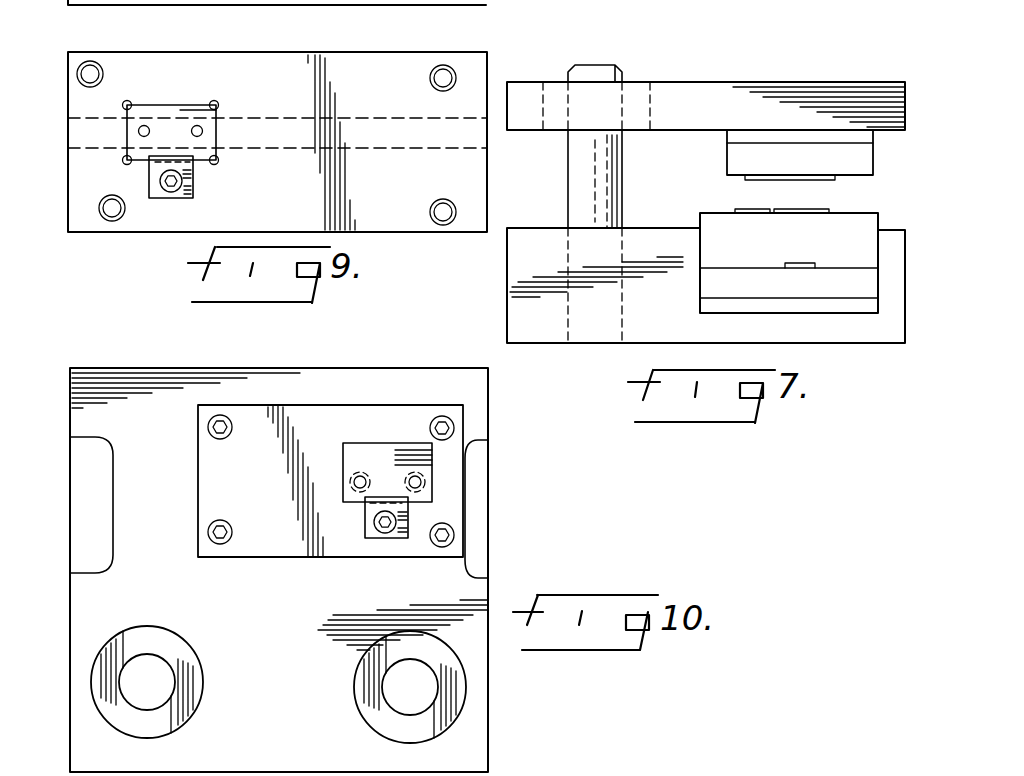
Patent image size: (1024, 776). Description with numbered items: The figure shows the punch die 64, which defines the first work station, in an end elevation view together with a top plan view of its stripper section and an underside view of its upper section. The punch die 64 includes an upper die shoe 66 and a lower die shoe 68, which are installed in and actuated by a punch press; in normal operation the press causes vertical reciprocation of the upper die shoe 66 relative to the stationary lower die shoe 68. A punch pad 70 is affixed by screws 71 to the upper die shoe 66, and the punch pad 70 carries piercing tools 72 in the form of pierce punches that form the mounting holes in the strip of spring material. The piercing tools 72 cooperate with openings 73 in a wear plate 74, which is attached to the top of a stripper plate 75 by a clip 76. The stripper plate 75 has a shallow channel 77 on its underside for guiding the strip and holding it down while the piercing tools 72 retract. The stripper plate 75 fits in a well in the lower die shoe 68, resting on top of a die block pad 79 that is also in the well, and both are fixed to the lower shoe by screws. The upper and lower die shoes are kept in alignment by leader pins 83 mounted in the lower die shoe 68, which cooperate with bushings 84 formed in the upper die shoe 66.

In FIG. 7, the punch die 64 is at (773, 72).
In FIG. 7, the upper die shoe 66 is at (688, 92).
In FIG. 10, the upper die shoe 66 is at (142, 370).
In FIG. 7, the lower die shoe 68 is at (507, 298).
In FIG. 7, the punch pad 70 is at (730, 158).
In FIG. 10, the punch pad 70 is at (328, 550).
In FIG. 10, the screws 71 is at (452, 428).
In FIG. 10, the piercing tools 72 is at (415, 473).
In FIG. 9, the openings 73 is at (198, 125).
In FIG. 9, the wear plate 74 is at (210, 138).
In FIG. 7, the wear plate 74 is at (807, 212).
In FIG. 9, the stripper plate 75 is at (70, 178).
In FIG. 7, the stripper plate 75 is at (705, 213).
In FIG. 9, the clip 76 is at (195, 189).
In FIG. 7, the clip 76 is at (748, 212).
In FIG. 9, the shallow channel 77 is at (367, 143).
In FIG. 7, the shallow channel 77 is at (798, 268).
In FIG. 7, the die block pad 79 is at (708, 287).
In FIG. 7, the leader pins 83 is at (593, 63).
In FIG. 7, the bushings 84 is at (550, 92).
In FIG. 10, the bushings 84 is at (178, 608).